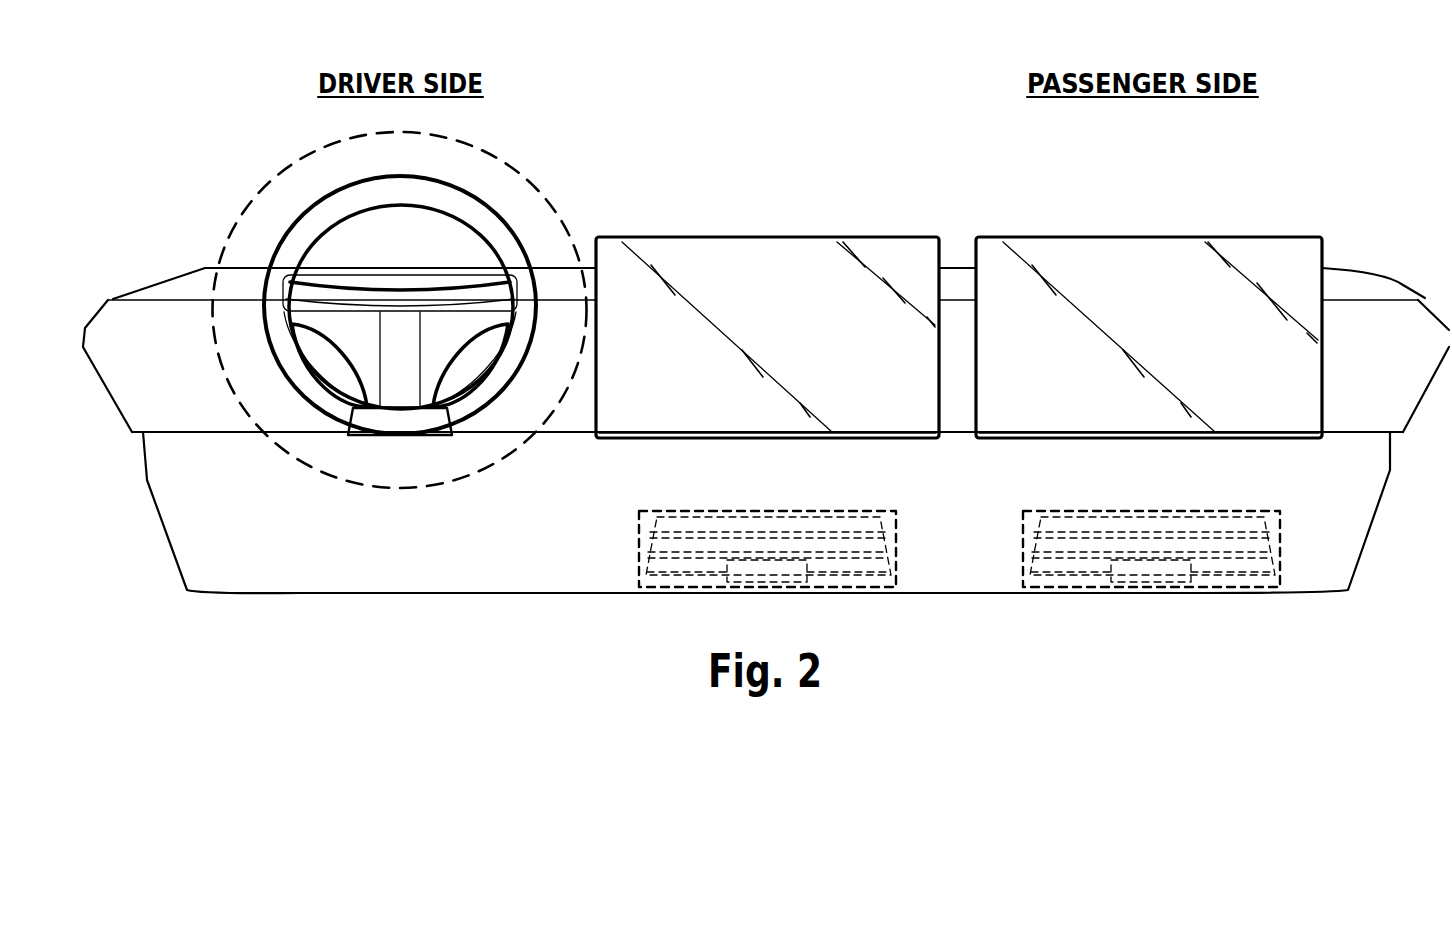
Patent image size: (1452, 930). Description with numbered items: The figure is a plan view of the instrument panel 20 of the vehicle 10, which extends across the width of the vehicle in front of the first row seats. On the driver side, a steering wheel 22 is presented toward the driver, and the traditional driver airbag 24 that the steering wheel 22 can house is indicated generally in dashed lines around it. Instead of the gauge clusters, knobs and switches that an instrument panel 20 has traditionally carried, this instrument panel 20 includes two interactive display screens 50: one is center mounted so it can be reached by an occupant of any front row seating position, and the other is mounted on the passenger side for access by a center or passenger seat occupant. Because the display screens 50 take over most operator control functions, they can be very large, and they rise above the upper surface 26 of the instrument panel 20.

The vehicle 10 is at (1282, 134).
The instrument panel 20 is at (538, 537).
The steering wheel 22 is at (305, 231).
The driver airbag 24 is at (488, 138).
The upper surface of the instrument panel 26 is at (960, 266).
The interactive display screens 50 is at (737, 272).